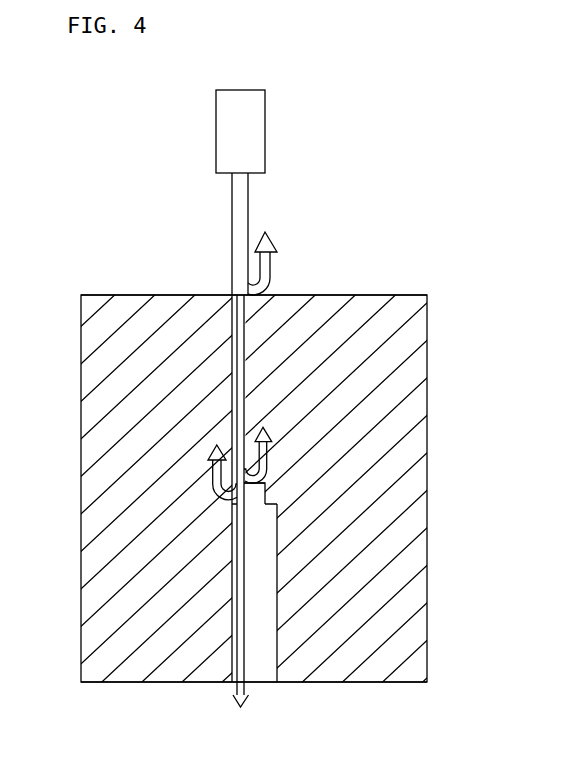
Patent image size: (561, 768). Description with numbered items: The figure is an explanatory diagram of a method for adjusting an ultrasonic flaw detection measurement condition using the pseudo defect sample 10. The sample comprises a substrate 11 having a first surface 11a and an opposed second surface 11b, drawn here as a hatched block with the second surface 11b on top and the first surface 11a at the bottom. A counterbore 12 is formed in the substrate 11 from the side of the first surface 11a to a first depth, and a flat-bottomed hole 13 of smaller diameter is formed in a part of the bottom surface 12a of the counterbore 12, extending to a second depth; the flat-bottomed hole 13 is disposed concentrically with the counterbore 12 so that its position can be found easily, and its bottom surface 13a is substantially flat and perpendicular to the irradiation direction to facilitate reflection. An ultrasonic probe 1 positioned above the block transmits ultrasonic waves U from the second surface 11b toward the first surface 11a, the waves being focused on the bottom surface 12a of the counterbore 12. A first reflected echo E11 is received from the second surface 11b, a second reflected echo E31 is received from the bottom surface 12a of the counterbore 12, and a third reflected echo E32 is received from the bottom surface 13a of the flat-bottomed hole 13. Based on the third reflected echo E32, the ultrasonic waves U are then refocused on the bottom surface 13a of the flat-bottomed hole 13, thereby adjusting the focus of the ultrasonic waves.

The ultrasonic probe 1 is at (242, 97).
The ultrasonic waves U is at (242, 190).
The pseudo defect sample 10 is at (364, 292).
The substrate 11 is at (408, 375).
The first surface 11a is at (350, 683).
The second surface 11b is at (383, 295).
The counterbore 12 is at (262, 596).
The bottom surface of the counterbore 12a is at (276, 506).
The flat-bottomed hole 13 is at (259, 498).
The bottom surface of the flat-bottomed hole 13a is at (266, 483).
The first reflected echo E11 is at (271, 262).
The second reflected echo E31 is at (213, 470).
The third reflected echo E32 is at (269, 441).